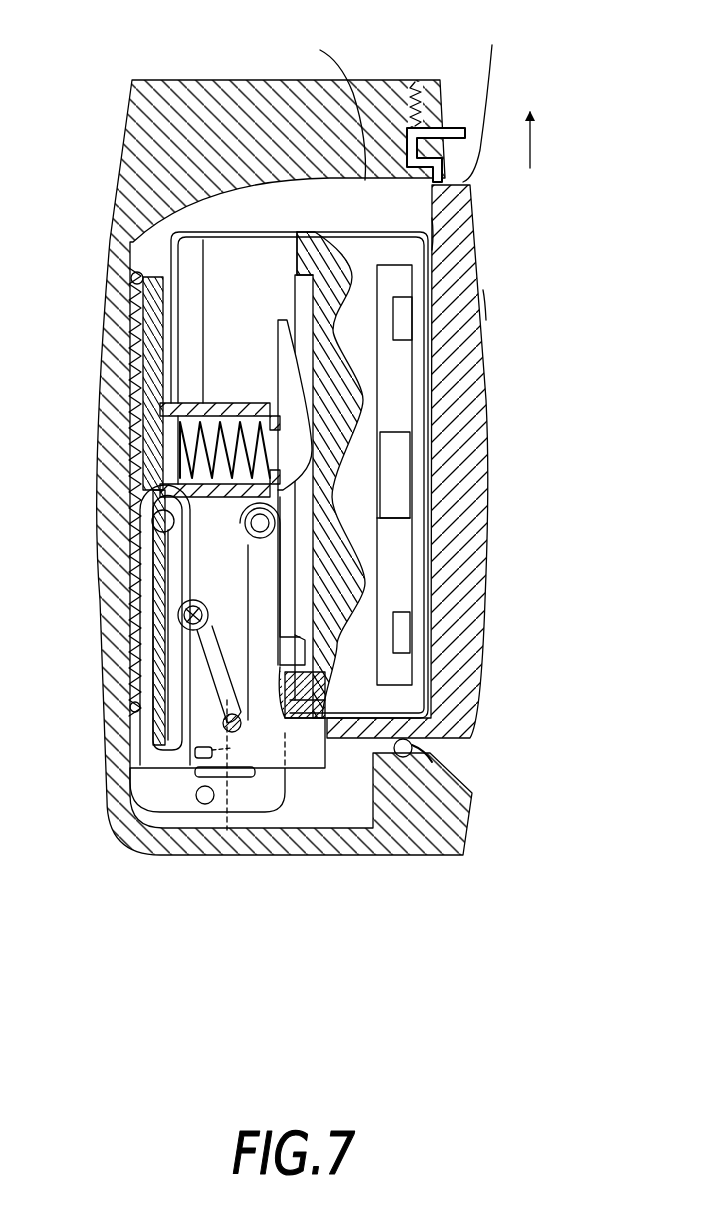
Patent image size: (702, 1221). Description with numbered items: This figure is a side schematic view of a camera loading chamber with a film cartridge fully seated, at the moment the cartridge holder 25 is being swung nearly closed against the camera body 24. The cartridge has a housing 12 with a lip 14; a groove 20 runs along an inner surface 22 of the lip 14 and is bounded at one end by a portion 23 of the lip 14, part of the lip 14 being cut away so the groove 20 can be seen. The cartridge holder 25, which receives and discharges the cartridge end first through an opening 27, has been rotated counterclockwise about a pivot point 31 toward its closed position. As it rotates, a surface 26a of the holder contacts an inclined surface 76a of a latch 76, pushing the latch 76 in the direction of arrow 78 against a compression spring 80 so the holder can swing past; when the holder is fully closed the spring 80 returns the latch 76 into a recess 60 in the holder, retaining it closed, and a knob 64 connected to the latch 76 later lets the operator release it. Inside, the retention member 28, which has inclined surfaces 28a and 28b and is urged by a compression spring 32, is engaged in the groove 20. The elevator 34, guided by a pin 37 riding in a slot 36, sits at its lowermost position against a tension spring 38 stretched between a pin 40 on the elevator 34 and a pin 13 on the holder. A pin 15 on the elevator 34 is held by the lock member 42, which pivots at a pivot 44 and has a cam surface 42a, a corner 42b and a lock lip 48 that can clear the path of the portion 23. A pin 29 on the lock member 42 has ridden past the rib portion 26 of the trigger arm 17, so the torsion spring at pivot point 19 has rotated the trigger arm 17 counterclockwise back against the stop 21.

The housing 12 is at (243, 232).
The pin 13 is at (130, 262).
The lip 14 is at (345, 240).
The pin 15 is at (185, 778).
The trigger arm 17 is at (185, 660).
The pivot point 19 is at (178, 621).
The groove 20 is at (315, 288).
The stop 21 is at (238, 730).
The inner surface 22 is at (297, 257).
The portion 23 is at (367, 683).
The camera body 24 is at (195, 80).
The cartridge holder 25 is at (483, 297).
The rib portion 26 is at (197, 722).
The surface 26a is at (432, 197).
The opening 27 is at (433, 223).
The retention member 28 is at (320, 444).
The inclined surface 28a is at (300, 380).
The inclined surface 28b is at (290, 478).
The pin 29 is at (203, 804).
The pivot point 31 is at (433, 762).
The compression spring 32 is at (227, 405).
The elevator 34 is at (130, 772).
The slot 36 is at (155, 578).
The pin 37 is at (152, 512).
The tension spring 38 is at (128, 326).
The pin 40 is at (130, 707).
The lock member 42 is at (222, 668).
The cam surface 42a is at (230, 830).
The corner 42b is at (327, 707).
The pivot 44 is at (255, 530).
The lock lip 48 is at (365, 650).
The recess 60 is at (440, 203).
The knob 64 is at (460, 128).
The latch 76 is at (320, 50).
The inclined surface 76a is at (492, 45).
The arrow 78 is at (530, 145).
The compression spring 80 is at (405, 88).